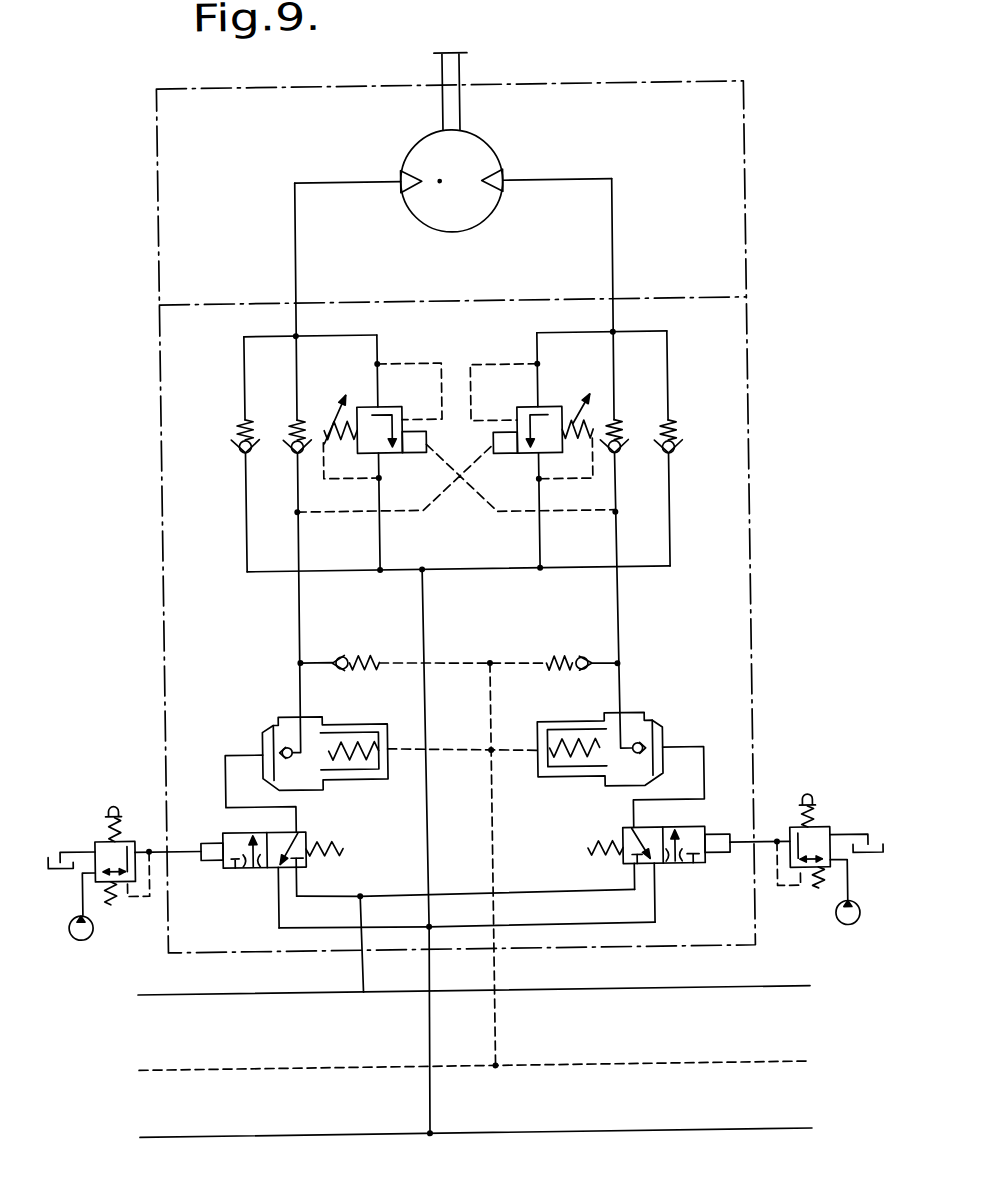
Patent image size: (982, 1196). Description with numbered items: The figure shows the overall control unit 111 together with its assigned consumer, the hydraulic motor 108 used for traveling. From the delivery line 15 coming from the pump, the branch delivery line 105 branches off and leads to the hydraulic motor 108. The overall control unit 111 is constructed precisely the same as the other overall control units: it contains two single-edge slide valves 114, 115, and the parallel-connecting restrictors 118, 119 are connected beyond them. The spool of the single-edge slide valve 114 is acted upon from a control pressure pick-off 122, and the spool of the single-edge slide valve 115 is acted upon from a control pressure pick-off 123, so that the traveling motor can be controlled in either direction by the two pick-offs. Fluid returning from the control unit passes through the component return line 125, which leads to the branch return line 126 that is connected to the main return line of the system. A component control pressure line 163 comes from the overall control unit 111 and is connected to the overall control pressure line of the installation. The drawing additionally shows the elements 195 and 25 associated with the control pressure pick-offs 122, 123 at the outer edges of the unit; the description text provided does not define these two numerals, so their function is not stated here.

The hydraulic motor 108 is at (500, 140).
The overall control unit 111 is at (752, 434).
The parallel-connecting restrictor 118 is at (274, 721).
The parallel-connecting restrictor 119 is at (657, 728).
The single-edge slide valve 114 is at (244, 867).
The single-edge slide valve 115 is at (680, 871).
The control pressure pick-off 122 is at (91, 838).
The control pressure pick-off 123 is at (826, 833).
The pilot pressure line 195 is at (77, 895).
The pressure gauge / transducer 25 is at (81, 933).
The branch delivery line 105 is at (357, 975).
The component return line 125 is at (423, 1028).
The component control pressure line 163 is at (490, 1013).
The branch return line 126 is at (342, 1133).
The delivery line 15 is at (666, 993).